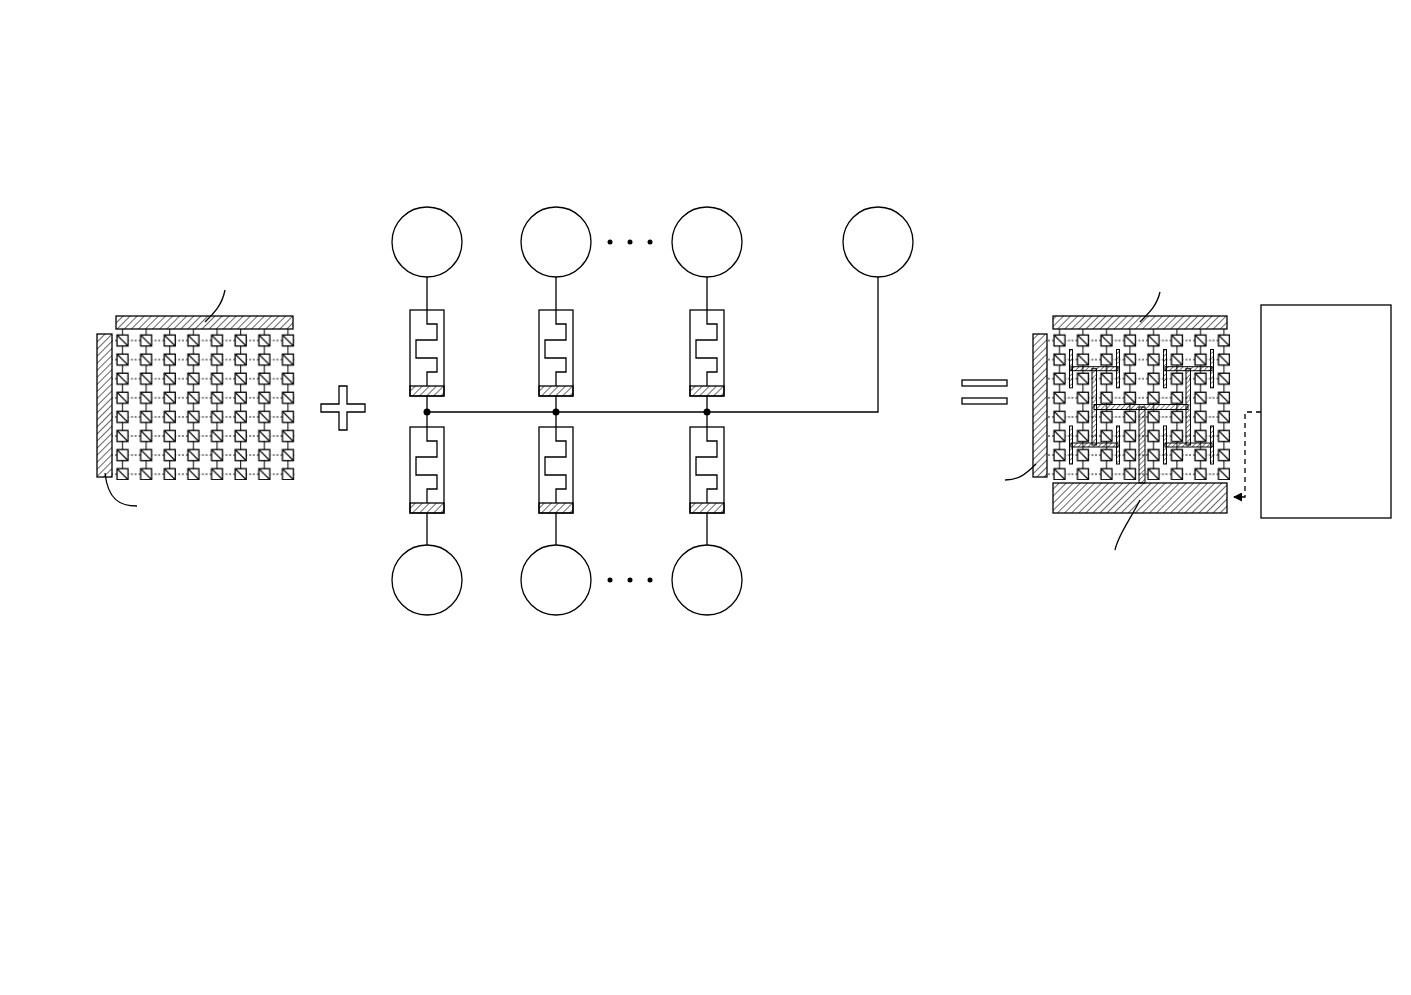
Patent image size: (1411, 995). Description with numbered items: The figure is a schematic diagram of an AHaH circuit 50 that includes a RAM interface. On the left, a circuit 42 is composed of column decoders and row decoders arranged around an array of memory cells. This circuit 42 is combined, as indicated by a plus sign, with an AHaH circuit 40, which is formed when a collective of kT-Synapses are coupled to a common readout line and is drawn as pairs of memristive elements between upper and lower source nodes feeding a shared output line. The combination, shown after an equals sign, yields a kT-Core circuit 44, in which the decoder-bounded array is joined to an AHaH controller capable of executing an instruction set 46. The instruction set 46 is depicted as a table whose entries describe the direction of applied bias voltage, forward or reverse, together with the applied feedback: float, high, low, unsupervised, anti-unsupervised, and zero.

The AHaH circuit 40 is at (879, 119).
The circuit 42 is at (274, 216).
The kT-Core circuit 44 is at (1196, 244).
The instruction set 46 is at (1324, 281).
The AHaH circuit with RAM interface 50 is at (1336, 61).